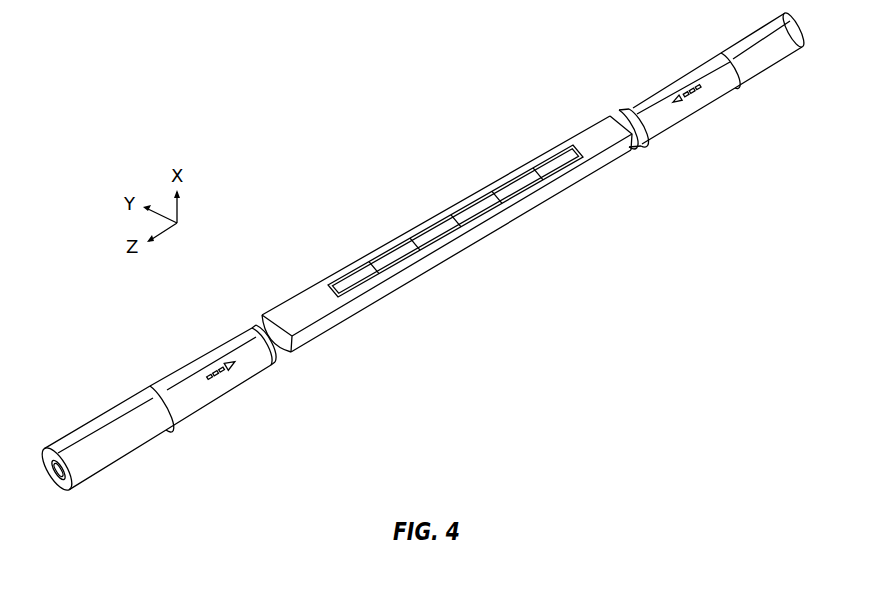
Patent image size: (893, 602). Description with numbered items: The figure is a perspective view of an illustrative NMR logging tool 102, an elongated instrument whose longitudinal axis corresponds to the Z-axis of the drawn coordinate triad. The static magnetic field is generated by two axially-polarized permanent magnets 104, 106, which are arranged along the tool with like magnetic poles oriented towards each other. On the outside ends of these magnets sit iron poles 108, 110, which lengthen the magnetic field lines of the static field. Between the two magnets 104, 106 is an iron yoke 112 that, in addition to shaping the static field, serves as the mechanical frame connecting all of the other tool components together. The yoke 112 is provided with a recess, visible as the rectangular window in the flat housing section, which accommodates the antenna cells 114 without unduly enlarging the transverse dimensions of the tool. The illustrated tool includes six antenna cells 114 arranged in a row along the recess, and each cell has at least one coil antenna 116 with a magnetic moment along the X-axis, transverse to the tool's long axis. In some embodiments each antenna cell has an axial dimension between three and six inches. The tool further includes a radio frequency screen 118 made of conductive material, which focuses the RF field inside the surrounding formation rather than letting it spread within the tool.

The NMR logging tool 102 is at (295, 126).
The axially-polarized permanent magnet 104 is at (194, 358).
The axially-polarized permanent magnet 106 is at (671, 83).
The iron pole 108 is at (95, 420).
The iron pole 110 is at (741, 39).
The iron yoke 112 is at (612, 114).
The antenna cells 114 is at (525, 160).
The coil antenna 116 is at (398, 249).
The radio frequency (RF) screen 118 is at (293, 298).